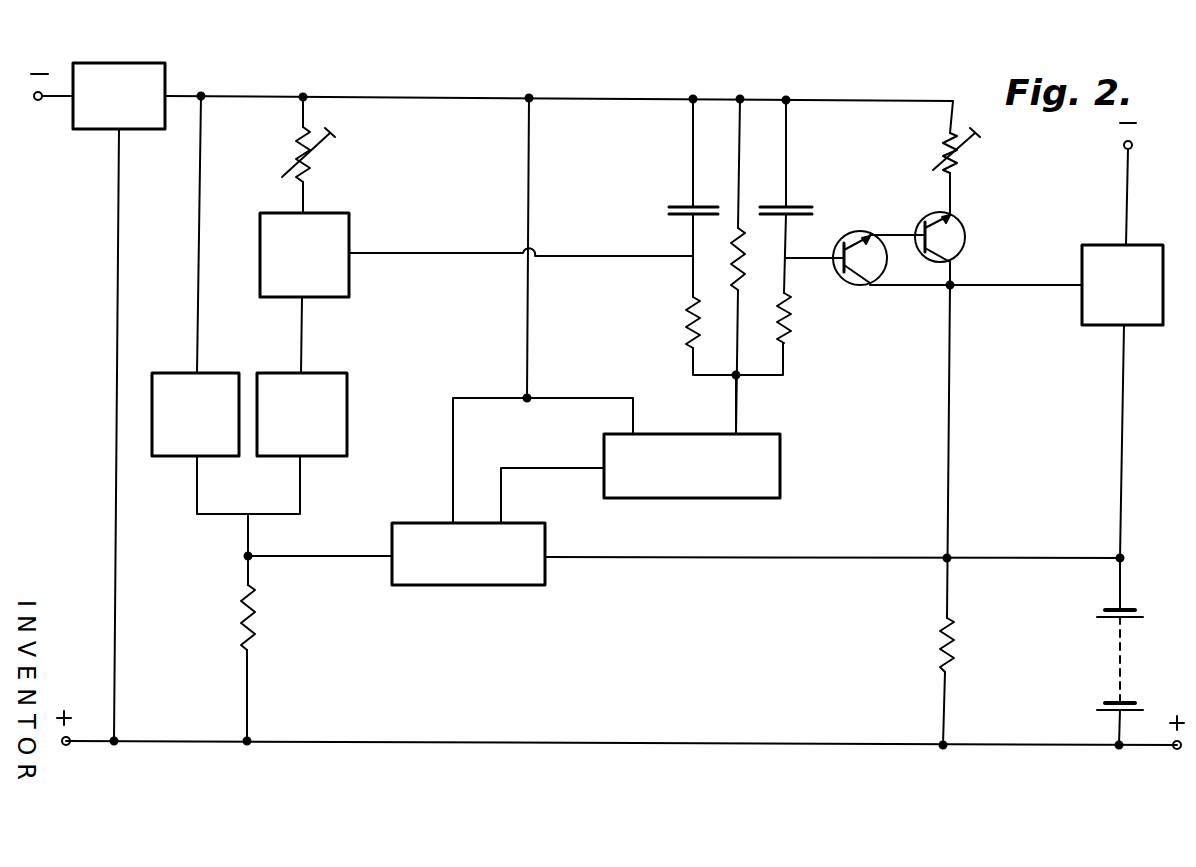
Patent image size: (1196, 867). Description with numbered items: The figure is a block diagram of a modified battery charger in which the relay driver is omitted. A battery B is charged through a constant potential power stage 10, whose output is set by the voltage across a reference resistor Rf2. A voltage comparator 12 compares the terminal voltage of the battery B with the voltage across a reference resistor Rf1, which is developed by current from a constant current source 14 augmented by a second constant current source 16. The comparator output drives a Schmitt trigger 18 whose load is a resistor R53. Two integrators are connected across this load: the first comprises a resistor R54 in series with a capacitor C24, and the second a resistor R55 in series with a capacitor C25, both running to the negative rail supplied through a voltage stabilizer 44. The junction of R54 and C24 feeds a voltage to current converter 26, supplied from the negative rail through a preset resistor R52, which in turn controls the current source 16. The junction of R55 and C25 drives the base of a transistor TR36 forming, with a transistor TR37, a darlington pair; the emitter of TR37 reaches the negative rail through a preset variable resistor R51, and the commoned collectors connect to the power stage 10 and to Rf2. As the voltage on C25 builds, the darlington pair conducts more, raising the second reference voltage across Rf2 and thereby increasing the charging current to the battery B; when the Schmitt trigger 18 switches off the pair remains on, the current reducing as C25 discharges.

The voltage stabilizer 44 is at (103, 118).
The preset resistor R52 is at (331, 154).
The voltage to current converter 26 is at (296, 285).
The constant current source 14 is at (183, 447).
The constant current source 16 is at (283, 447).
The voltage comparator 12 is at (422, 577).
The Schmitt trigger 18 is at (633, 485).
The power stage 10 is at (1105, 312).
The capacitor C24 is at (668, 212).
The capacitor C25 is at (806, 210).
The resistor R53 is at (735, 255).
The resistor R54 is at (690, 325).
The resistor R55 is at (790, 326).
The preset variable resistor R51 is at (968, 165).
The transistor TR36 is at (862, 287).
The transistor TR37 is at (960, 222).
The reference resistor Rf1 is at (274, 617).
The reference resistor Rf2 is at (972, 645).
The battery B is at (1123, 653).